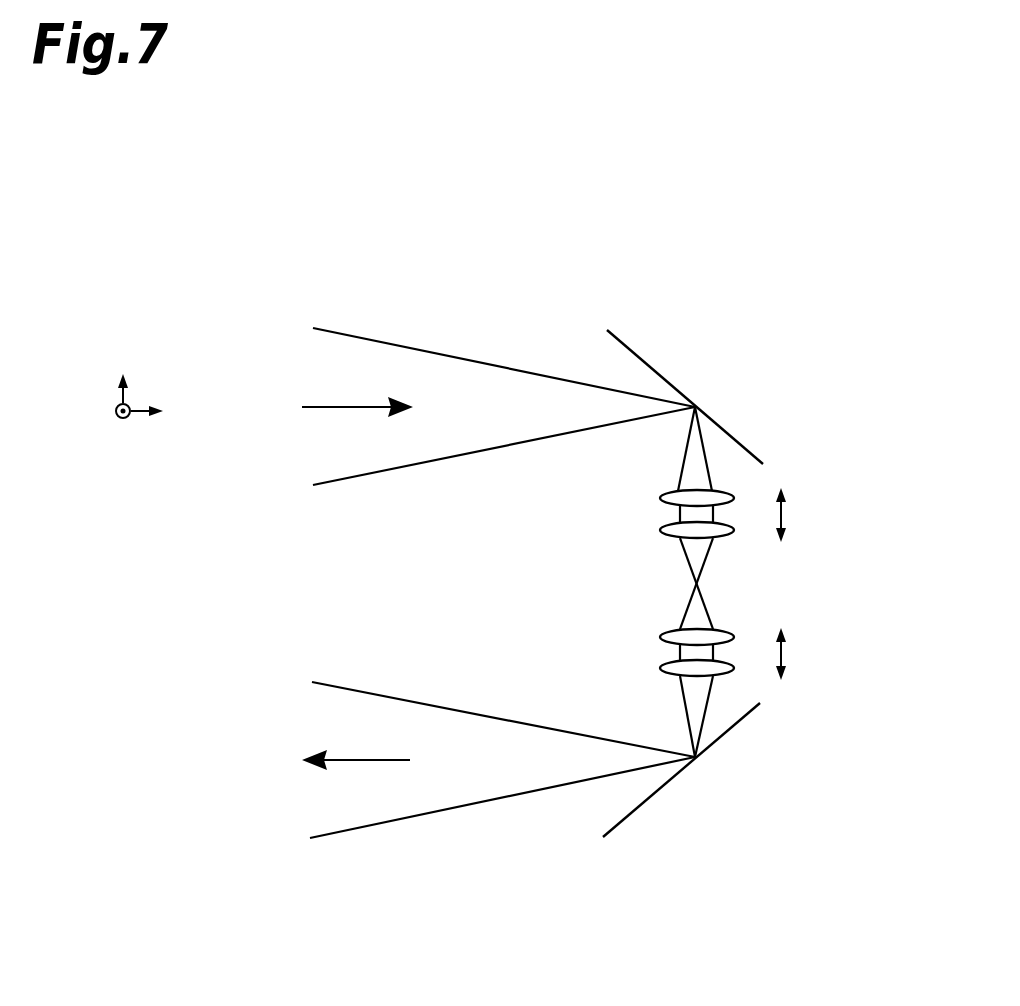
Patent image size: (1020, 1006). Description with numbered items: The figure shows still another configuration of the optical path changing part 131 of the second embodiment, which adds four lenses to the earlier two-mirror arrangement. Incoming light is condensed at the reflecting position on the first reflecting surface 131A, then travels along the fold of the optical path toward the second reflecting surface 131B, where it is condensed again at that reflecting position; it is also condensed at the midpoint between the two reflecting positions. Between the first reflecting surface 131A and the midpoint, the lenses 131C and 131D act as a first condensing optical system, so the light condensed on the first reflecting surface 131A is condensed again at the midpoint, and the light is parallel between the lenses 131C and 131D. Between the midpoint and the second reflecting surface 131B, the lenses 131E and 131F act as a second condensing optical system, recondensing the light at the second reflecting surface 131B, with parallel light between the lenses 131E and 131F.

The optical path changing part 131 is at (772, 213).
The first reflecting surface 131A is at (742, 445).
The second reflecting surface 131B is at (735, 727).
The lens 131C is at (660, 497).
The lens 131D is at (660, 530).
The lens 131E is at (660, 636).
The lens 131F is at (660, 668).